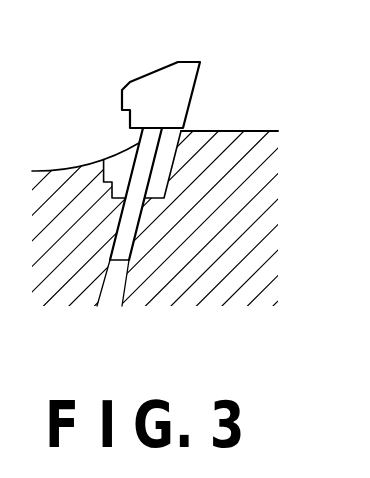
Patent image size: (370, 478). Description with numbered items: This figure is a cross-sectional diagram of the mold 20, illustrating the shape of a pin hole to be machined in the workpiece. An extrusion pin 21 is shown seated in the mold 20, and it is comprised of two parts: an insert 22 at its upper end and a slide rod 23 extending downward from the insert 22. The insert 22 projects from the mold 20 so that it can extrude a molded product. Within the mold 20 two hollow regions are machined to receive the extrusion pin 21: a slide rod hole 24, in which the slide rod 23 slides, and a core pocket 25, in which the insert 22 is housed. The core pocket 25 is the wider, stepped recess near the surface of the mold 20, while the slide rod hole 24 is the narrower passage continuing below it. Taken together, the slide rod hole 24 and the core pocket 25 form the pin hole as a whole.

The mold 20 is at (245, 148).
The extrusion pin 21 is at (186, 181).
The insert 22 is at (157, 82).
The slide rod 23 is at (128, 242).
The slide rod hole 24 is at (113, 288).
The core pocket 25 is at (125, 163).